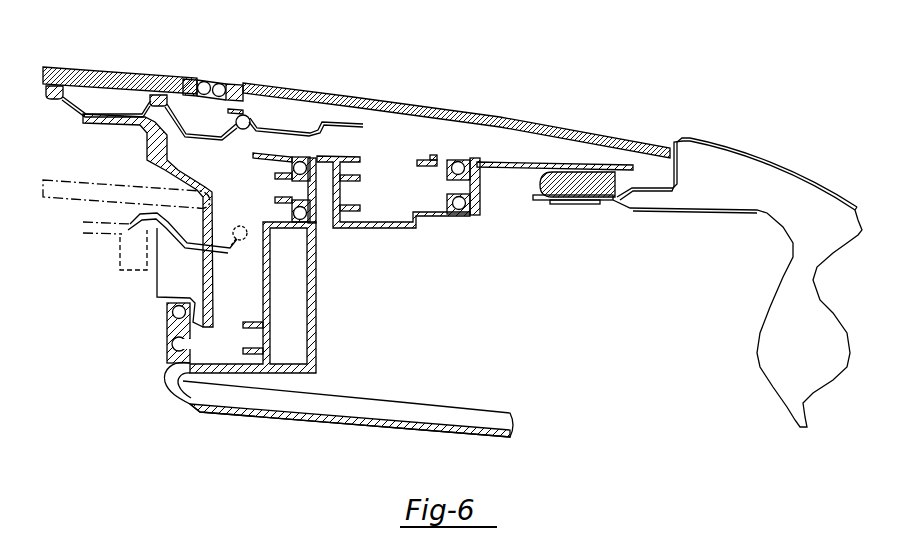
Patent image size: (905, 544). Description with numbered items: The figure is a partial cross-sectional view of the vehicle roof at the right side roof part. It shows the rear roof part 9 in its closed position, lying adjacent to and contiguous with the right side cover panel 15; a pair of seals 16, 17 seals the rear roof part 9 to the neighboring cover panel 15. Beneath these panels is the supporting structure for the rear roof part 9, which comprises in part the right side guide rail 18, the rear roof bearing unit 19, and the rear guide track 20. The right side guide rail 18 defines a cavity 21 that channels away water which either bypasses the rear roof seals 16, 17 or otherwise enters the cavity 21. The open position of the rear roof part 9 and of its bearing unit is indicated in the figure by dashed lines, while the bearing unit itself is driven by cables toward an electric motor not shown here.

The rear roof part 9 is at (118, 72).
The right side cover panel 15 is at (166, 334).
The seal 16 is at (242, 292).
The seal 17 is at (200, 81).
The right side guide rail 18 is at (148, 150).
The rear roof bearing unit 19 is at (496, 121).
The rear guide track 20 is at (171, 312).
The cavity 21 is at (251, 129).